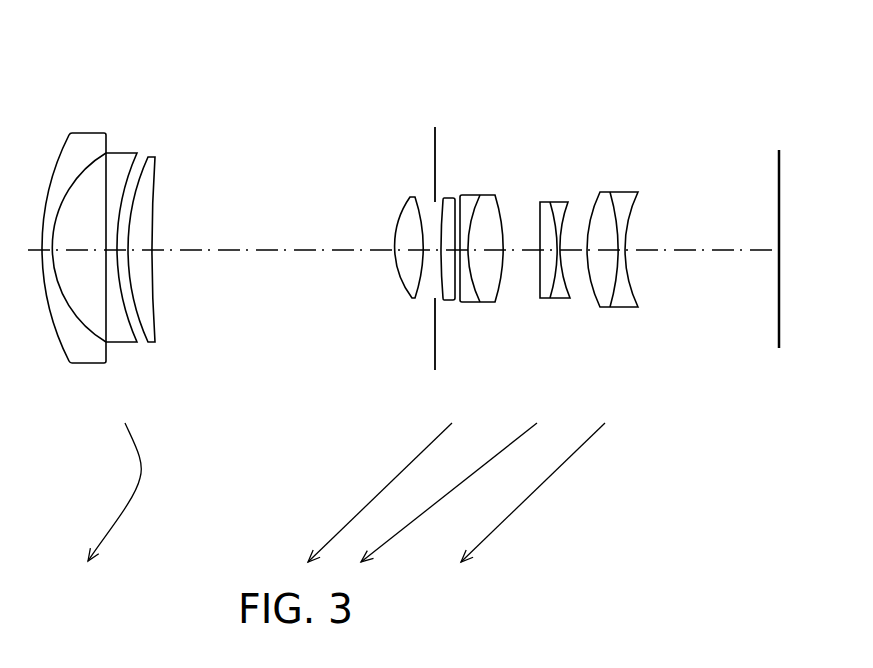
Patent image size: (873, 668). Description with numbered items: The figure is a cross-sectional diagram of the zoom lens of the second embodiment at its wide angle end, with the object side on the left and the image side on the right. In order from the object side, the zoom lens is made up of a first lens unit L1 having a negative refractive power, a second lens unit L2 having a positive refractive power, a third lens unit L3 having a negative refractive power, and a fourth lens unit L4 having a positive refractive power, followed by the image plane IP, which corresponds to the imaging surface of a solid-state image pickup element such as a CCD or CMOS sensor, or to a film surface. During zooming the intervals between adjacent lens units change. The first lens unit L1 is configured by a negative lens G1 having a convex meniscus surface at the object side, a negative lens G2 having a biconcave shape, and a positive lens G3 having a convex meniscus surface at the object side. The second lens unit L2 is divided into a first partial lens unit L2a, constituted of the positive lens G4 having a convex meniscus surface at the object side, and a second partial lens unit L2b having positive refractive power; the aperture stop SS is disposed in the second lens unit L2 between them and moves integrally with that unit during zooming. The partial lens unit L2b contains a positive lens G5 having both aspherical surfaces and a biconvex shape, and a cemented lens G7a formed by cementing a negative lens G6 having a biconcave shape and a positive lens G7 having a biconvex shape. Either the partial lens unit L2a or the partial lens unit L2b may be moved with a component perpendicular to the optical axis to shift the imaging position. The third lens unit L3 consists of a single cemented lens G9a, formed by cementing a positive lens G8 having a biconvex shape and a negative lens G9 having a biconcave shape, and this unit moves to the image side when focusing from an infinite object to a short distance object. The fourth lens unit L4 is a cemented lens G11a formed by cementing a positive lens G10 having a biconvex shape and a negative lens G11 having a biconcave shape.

The first lens unit L1 is at (170, 62).
The second lens unit L2 is at (507, 62).
The third lens unit L3 is at (530, 62).
The fourth lens unit L4 is at (637, 62).
The partial lens unit L2a is at (347, 135).
The partial lens unit L2b is at (442, 107).
The aperture stop SS is at (437, 167).
The negative lens G1 is at (83, 147).
The negative lens G2 is at (118, 163).
The positive lens G3 is at (153, 158).
The positive lens G4 is at (405, 203).
The positive lens G5 is at (450, 207).
The negative lens G6 is at (469, 197).
The positive lens G7 is at (487, 207).
The cemented lens G7a is at (460, 143).
The positive lens G8 is at (543, 282).
The negative lens G9 is at (557, 283).
The cemented lens G9a is at (507, 378).
The positive lens G10 is at (602, 207).
The negative lens G11 is at (623, 205).
The cemented lens G11a is at (663, 135).
The image plane IP is at (779, 217).